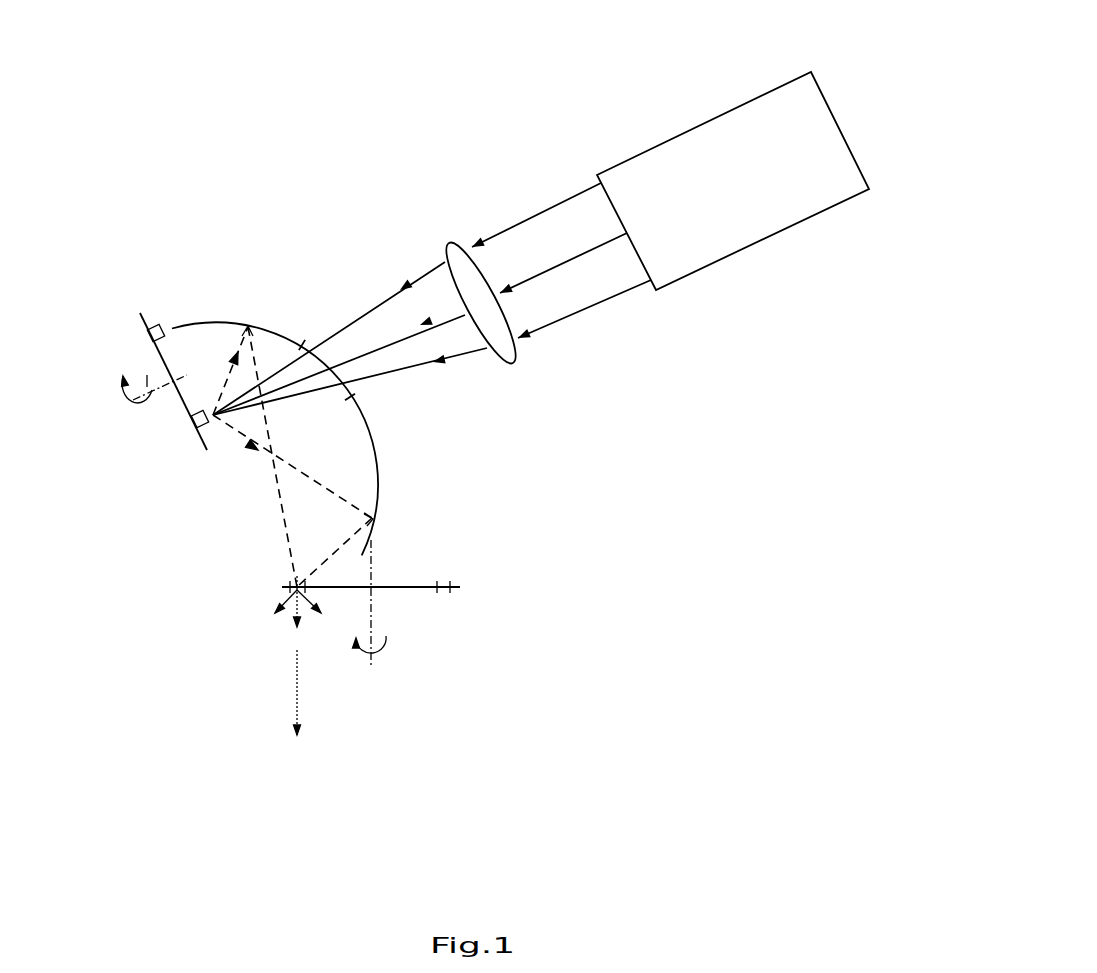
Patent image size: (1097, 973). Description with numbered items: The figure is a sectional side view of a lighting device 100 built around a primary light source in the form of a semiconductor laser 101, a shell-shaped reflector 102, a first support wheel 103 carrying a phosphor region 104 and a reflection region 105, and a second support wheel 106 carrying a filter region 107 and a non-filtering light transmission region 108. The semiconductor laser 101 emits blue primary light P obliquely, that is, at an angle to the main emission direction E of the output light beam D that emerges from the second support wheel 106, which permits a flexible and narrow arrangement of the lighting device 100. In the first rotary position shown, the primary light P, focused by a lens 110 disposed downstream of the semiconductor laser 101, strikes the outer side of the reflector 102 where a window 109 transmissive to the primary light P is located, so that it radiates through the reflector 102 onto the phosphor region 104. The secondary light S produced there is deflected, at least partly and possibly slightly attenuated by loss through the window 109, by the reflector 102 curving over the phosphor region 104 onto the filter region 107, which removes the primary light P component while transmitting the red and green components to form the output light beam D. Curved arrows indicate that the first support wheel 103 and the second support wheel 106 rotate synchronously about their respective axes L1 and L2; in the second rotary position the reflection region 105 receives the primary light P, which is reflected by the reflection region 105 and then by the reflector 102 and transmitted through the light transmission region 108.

The lighting device 100 is at (402, 102).
The semiconductor laser 101 is at (693, 157).
The shell-shaped reflector 102 is at (307, 409).
The first support wheel 103 is at (134, 381).
The phosphor region 104 is at (197, 427).
The reflection region 105 is at (165, 332).
The second support wheel 106 is at (346, 602).
The filter region 107 is at (270, 571).
The light transmission region 108 is at (448, 587).
The window 109 is at (307, 338).
The lens 110 is at (510, 355).
The primary light P is at (528, 220).
The secondary light S is at (283, 510).
The output light beam D is at (277, 610).
The main emission direction E is at (298, 702).
The axis of rotation of the first support wheel L1 is at (130, 402).
The axis of rotation of the second support wheel L2 is at (370, 668).